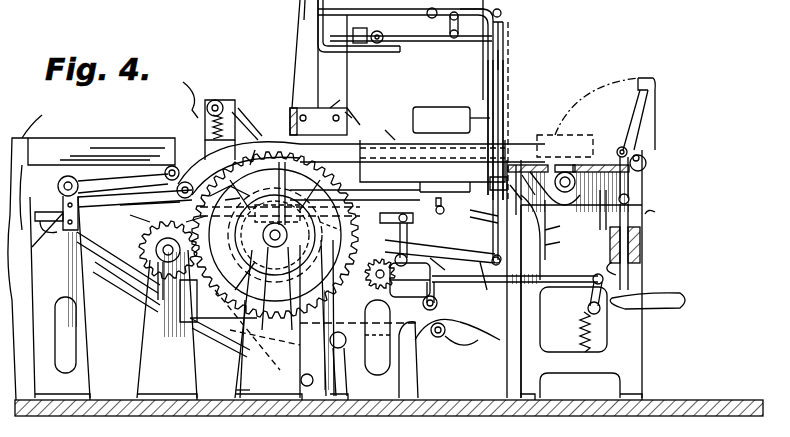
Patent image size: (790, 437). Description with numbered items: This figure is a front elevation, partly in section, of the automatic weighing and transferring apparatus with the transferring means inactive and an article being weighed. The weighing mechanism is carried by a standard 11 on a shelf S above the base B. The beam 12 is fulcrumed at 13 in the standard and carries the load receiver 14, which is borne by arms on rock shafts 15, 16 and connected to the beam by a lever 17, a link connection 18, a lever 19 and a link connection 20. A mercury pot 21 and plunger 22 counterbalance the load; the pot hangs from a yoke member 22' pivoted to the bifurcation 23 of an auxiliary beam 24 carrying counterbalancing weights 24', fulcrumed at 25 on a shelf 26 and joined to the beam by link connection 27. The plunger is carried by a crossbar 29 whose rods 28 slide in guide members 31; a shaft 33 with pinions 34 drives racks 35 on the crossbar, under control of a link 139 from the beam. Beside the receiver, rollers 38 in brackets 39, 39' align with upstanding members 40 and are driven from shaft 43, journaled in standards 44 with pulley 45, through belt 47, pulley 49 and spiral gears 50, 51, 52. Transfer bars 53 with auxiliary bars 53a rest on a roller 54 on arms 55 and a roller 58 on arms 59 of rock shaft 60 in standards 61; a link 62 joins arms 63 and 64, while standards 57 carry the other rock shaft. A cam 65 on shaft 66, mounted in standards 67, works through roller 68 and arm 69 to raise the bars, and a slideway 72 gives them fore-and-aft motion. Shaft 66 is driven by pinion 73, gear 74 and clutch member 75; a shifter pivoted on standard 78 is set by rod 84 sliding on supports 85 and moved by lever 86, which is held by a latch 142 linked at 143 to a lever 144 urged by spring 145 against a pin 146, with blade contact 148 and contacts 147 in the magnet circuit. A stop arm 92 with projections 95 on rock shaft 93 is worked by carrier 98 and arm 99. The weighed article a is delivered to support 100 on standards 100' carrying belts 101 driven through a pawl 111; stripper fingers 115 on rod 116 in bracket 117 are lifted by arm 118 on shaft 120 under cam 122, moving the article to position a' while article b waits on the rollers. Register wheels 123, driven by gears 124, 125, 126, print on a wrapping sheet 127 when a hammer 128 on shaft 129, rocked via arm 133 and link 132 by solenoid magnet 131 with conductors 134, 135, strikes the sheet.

The standard 11 is at (290, 62).
The steelyard or beam 12 is at (377, 282).
The fulcrum 13 is at (300, 5).
The article or load receiver 14 is at (440, 206).
The rock shaft 15 is at (355, 200).
The rock shaft 16 is at (458, 192).
The lever 17 is at (442, 112).
The link connection 18 is at (441, 221).
The lever 19 is at (412, 192).
The link connection 20 is at (338, 110).
The mercury carrying pot 21 is at (524, 279).
The displacement member or plunger 22 is at (522, 130).
The yoke member 22' is at (539, 121).
The bifurcation 23 is at (503, 36).
The auxiliary beam 24 is at (411, 36).
The counterbalancing weights 24' is at (361, 61).
The fulcrum or pivotal support 25 is at (385, 50).
The shelf 26 is at (336, 52).
The link connection 27 is at (429, 9).
The rods 28 is at (505, 16).
The crossbar 29 is at (474, 4).
The vertical guide members 31 is at (485, 108).
The shaft 33 is at (532, 237).
The pinions 34 is at (569, 174).
The racks 35 is at (510, 50).
The rollers 38 is at (412, 184).
The bracket 39 is at (247, 114).
The bracket 39' is at (363, 119).
The parallel and spaced members 40 is at (395, 127).
The shaft 43 is at (110, 258).
The standards 44 is at (167, 324).
The pulley 45 is at (138, 244).
The belt 47 is at (183, 94).
The pulley 49 is at (214, 100).
The spiral gears 50 is at (224, 108).
The spiral gears 51 is at (210, 118).
The spiral gears 52 is at (205, 135).
The transfer bars 53 is at (105, 134).
The auxiliary bars 53a is at (455, 326).
The roller 54 is at (167, 163).
The arms 55 is at (123, 186).
The standards 57 is at (76, 362).
The roller 58 is at (470, 344).
The arms 59 is at (440, 338).
The rock shaft 60 is at (377, 337).
The standards 61 is at (418, 380).
The link 62 is at (243, 350).
The arm 63 is at (352, 364).
The arm 64 is at (59, 188).
The cam 65 is at (232, 383).
The shaft 66 is at (265, 288).
The standards 67 is at (300, 382).
The cam following roller 68 is at (326, 318).
The arm 69 is at (257, 330).
The vertical slideway 72 is at (223, 337).
The pinion 73 is at (140, 283).
The gear 74 is at (159, 301).
The clutch member 75 is at (306, 237).
The standard 78 is at (267, 321).
The shifter rod 84 is at (135, 203).
The shifter bar supports 85 is at (36, 228).
The lever 86 is at (403, 252).
The curved stop arm 92 is at (256, 148).
The rock shaft 93 is at (205, 174).
The spaced projections 95 is at (350, 116).
The carrier 98 is at (230, 191).
The arm 99 is at (150, 207).
The second support 100 is at (579, 188).
The standards 100' is at (605, 274).
The belts 101 is at (632, 203).
The pawl 111 is at (443, 248).
The stripper fingers 115 is at (505, 160).
The rod 116 is at (525, 170).
The bracket 117 is at (475, 223).
The arm 118 is at (496, 284).
The shaft 120 is at (336, 232).
The cam 122 is at (292, 202).
The registering wheels 123 is at (572, 206).
The gear 124 is at (561, 255).
The gear 125 is at (561, 240).
The gear 126 is at (562, 230).
The wrapping sheet 127 is at (626, 120).
The hammer or platen 128 is at (653, 126).
The shaft 129 is at (630, 152).
The solenoid magnet 131 is at (642, 239).
The link connection 132 is at (630, 181).
The arm 133 is at (646, 164).
The conductor 134 is at (640, 276).
The conductor 135 is at (662, 212).
The link 139 is at (482, 74).
The latch 142 is at (439, 301).
The link 143 is at (517, 270).
The lever 144 is at (588, 302).
The spring 145 is at (600, 322).
The pin 146 is at (645, 320).
The contacts 147 is at (410, 290).
The blade contact 148 is at (410, 280).
The article a is at (441, 120).
The article position a' is at (587, 117).
The article b is at (318, 121).
The base B is at (450, 400).
The plate P is at (18, 269).
The shelf S is at (39, 117).